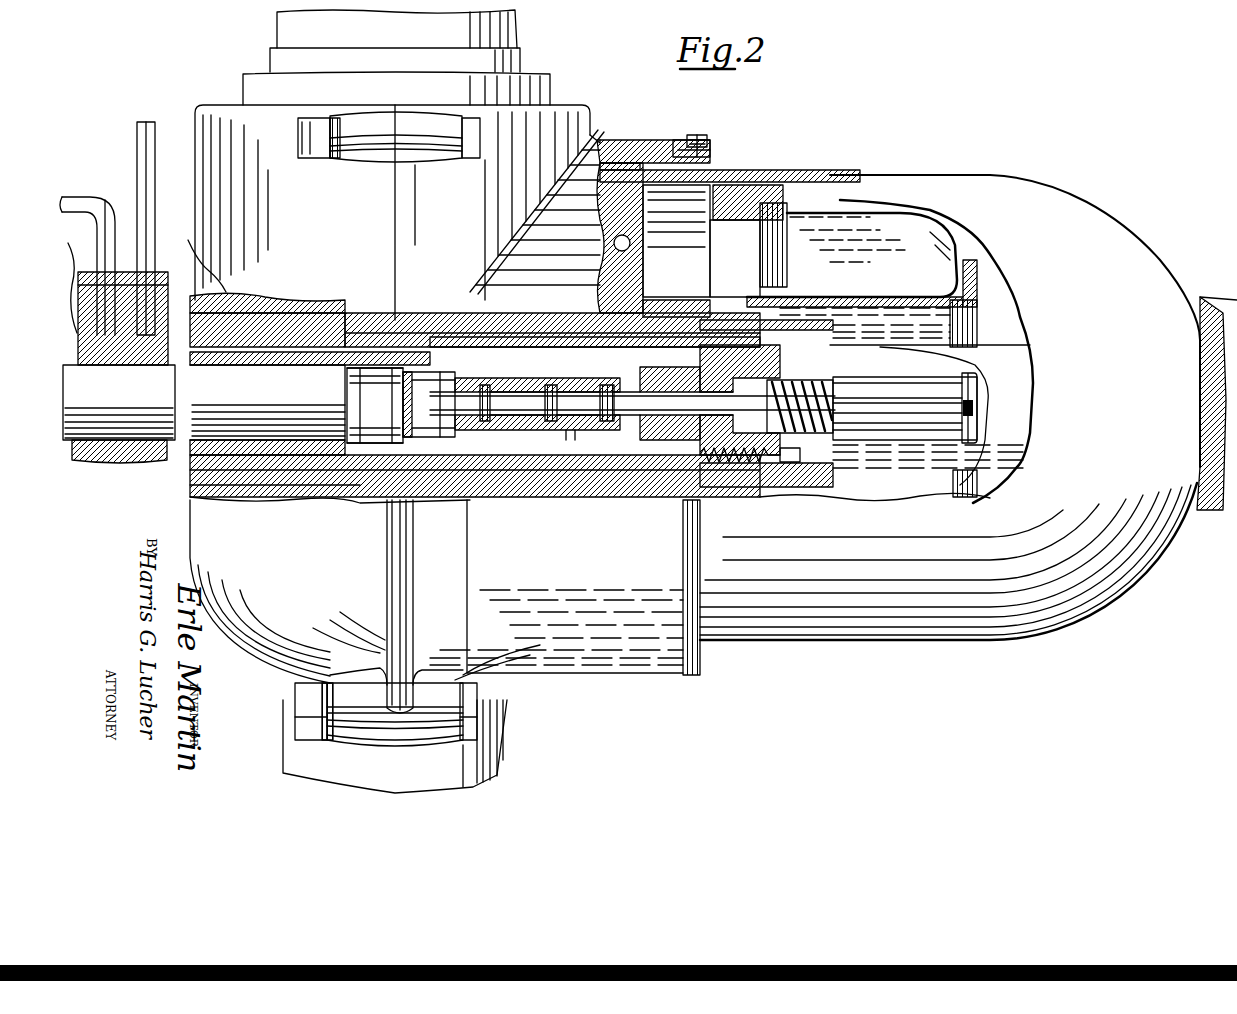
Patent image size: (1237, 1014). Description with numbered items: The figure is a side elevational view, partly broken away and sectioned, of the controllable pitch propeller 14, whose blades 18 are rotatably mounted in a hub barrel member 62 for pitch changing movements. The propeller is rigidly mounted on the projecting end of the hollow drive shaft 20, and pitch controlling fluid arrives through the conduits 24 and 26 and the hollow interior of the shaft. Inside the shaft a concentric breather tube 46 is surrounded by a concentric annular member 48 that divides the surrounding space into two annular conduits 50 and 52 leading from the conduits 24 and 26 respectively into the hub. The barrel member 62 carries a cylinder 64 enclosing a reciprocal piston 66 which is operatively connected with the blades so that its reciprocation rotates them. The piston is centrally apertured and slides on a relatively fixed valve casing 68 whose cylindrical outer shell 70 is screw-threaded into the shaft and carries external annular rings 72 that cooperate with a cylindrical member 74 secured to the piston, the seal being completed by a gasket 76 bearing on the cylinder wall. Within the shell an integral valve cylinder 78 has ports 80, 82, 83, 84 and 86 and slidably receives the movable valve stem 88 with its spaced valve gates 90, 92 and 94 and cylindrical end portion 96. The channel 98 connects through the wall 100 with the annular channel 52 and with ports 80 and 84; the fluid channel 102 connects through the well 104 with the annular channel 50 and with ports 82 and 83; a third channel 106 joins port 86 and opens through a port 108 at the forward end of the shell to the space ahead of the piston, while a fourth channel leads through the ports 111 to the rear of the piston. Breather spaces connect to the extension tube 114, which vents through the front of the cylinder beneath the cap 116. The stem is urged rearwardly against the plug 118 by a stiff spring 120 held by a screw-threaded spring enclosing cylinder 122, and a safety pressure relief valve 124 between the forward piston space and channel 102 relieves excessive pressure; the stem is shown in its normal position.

The controllable pitch propeller 14 is at (603, 112).
The blades 18 is at (527, 32).
The hollow drive shaft 20 is at (355, 318).
The conduit 24 is at (113, 190).
The conduit 26 is at (137, 140).
The breather tube 46 is at (385, 392).
The concentric annular member 48 is at (88, 292).
The annular conduit 50 is at (262, 372).
The annular conduit 52 is at (262, 300).
The hub barrel member 62 is at (200, 165).
The cylinder 64 is at (865, 175).
The piston 66 is at (800, 212).
The valve casing 68 is at (580, 455).
The outer shell 70 is at (545, 318).
The external annular rings 72 is at (770, 322).
The cylindrical member 74 is at (580, 318).
The gasket 76 is at (730, 200).
The valve cylinder 78 is at (522, 378).
The valve port 80 is at (470, 378).
The valve port 82 is at (538, 430).
The valve port 83 is at (690, 432).
The valve port 84 is at (607, 385).
The valve port 86 is at (660, 380).
The valve stem 88 is at (480, 432).
The valve gate 90 is at (503, 430).
The valve gate 92 is at (556, 385).
The valve gate 94 is at (628, 432).
The cylindrical end portion 96 is at (720, 375).
The channel 98 is at (500, 313).
The wall 100 is at (395, 322).
The fluid channel 102 is at (535, 455).
The well 104 is at (388, 425).
The channel 106 is at (700, 288).
The port 108 is at (855, 320).
The ports 111 is at (582, 433).
The extension tube 114 is at (945, 335).
The cap 116 is at (1205, 295).
The plug 118 is at (432, 395).
The spring 120 is at (840, 398).
The spring enclosing cylinder 122 is at (915, 460).
The safety pressure relief valve 124 is at (795, 490).